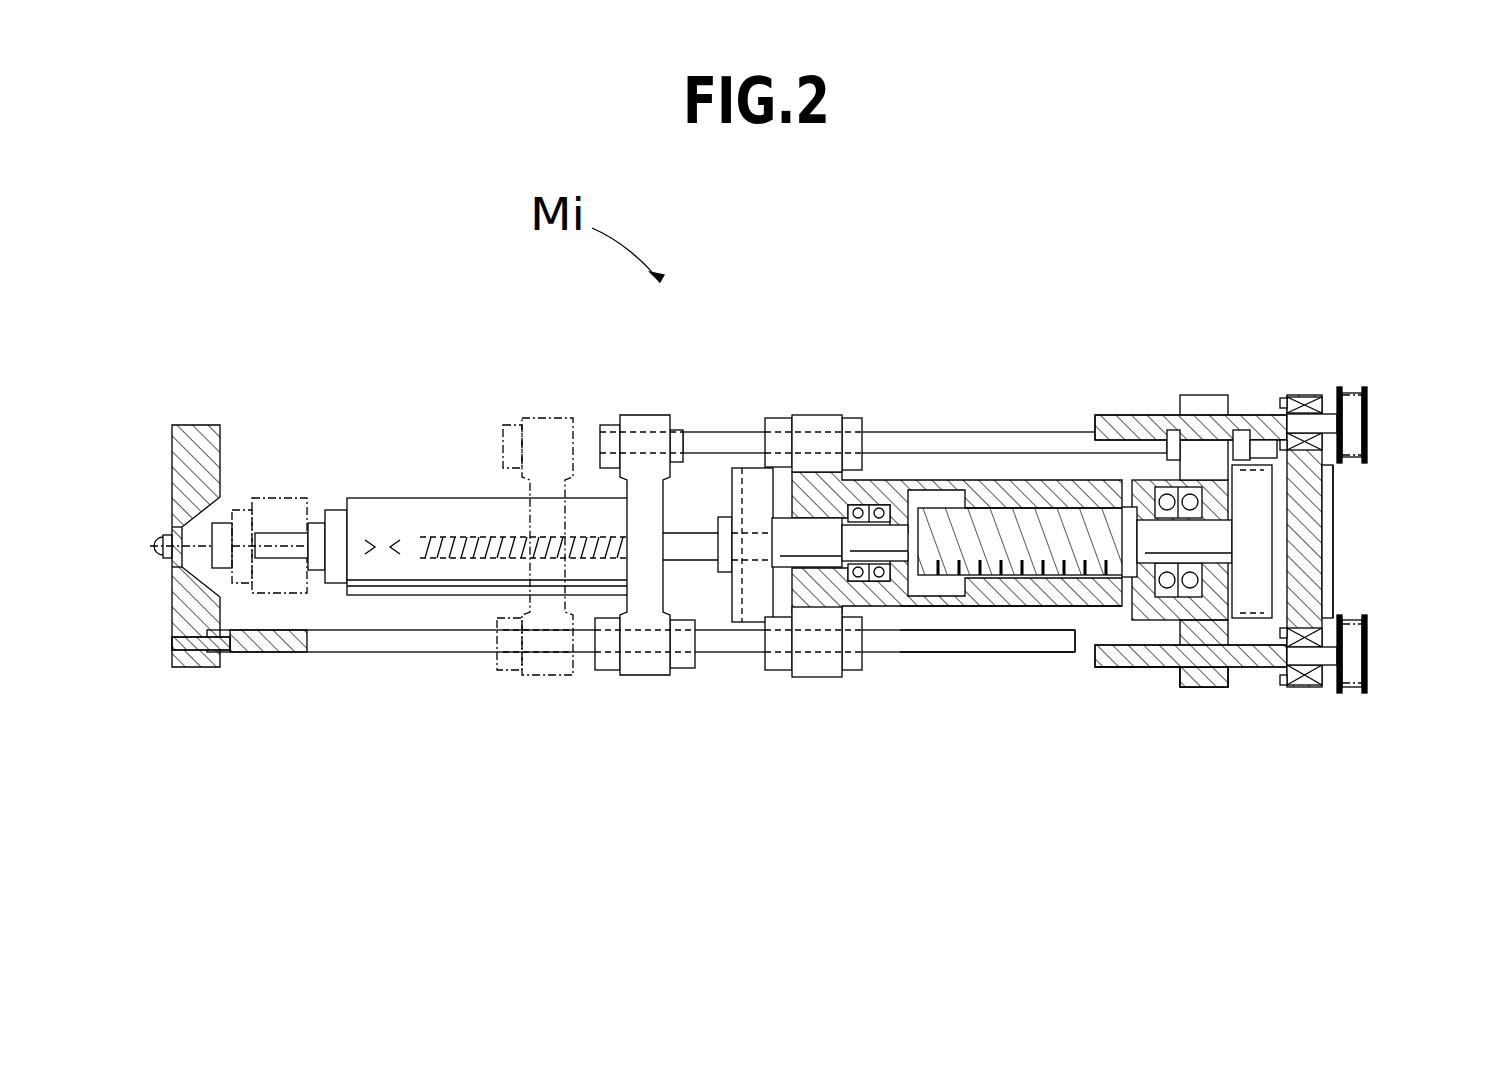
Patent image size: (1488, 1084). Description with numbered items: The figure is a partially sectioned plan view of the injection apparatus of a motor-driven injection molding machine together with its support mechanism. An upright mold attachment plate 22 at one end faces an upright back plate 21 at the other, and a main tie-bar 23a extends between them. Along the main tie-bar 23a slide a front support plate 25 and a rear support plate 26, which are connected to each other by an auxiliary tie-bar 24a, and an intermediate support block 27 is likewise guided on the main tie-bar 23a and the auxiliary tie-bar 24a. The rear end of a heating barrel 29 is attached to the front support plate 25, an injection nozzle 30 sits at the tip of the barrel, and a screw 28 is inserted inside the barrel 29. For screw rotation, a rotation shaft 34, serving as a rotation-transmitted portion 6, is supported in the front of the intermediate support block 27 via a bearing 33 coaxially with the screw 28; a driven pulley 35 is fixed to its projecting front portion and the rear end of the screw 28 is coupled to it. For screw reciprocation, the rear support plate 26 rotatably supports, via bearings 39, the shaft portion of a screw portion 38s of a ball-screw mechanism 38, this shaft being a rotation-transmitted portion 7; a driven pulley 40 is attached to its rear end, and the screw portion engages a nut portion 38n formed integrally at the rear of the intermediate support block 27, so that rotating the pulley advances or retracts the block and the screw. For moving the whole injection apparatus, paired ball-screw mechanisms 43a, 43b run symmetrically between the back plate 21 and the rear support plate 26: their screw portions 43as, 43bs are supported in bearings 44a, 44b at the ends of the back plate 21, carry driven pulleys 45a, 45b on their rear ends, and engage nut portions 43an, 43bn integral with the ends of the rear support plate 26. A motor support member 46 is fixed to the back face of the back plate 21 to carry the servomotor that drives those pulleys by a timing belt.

The rotation-transmitted portion 6 is at (816, 550).
The rotation-transmitted portion 7 is at (1120, 418).
The back plate 21 is at (1323, 523).
The mold attachment plate 22 is at (190, 425).
The main tie-bar 23a is at (390, 655).
The auxiliary tie-bar 24a is at (722, 432).
The front support plate 25 is at (628, 418).
The rear support plate 26 is at (1307, 597).
The intermediate support block 27 is at (813, 677).
The screw 28 is at (453, 520).
The heating barrel 29 is at (368, 498).
The injection nozzle 30 is at (287, 540).
The bearing 33 is at (882, 505).
The rotation shaft 34 is at (816, 470).
The driven pulley 35 is at (757, 622).
The ball-screw mechanism 38 is at (985, 607).
The screw portion 38s is at (1020, 508).
The nut portion 38n is at (1040, 650).
The bearings 39 is at (1207, 415).
The driven pulley 40 is at (1258, 680).
The ball-screw mechanism 43a is at (1157, 692).
The ball-screw mechanism 43b is at (1147, 378).
The nut portion 43an is at (1213, 690).
The nut portion 43bn is at (1185, 415).
The screw portion 43as is at (1117, 690).
The screw portion 43bs is at (1260, 415).
The bearing 44a is at (1308, 690).
The bearing 44b is at (1318, 400).
The driven pulley 45a is at (1368, 665).
The driven pulley 45b is at (1368, 430).
The motor support member 46 is at (1335, 487).